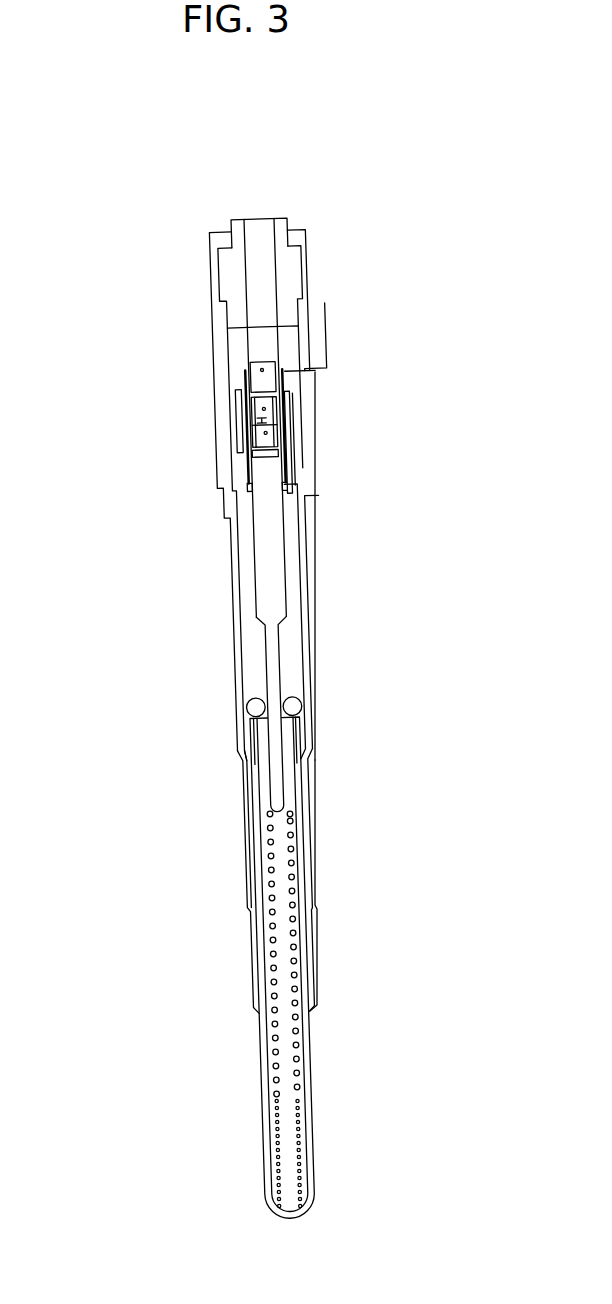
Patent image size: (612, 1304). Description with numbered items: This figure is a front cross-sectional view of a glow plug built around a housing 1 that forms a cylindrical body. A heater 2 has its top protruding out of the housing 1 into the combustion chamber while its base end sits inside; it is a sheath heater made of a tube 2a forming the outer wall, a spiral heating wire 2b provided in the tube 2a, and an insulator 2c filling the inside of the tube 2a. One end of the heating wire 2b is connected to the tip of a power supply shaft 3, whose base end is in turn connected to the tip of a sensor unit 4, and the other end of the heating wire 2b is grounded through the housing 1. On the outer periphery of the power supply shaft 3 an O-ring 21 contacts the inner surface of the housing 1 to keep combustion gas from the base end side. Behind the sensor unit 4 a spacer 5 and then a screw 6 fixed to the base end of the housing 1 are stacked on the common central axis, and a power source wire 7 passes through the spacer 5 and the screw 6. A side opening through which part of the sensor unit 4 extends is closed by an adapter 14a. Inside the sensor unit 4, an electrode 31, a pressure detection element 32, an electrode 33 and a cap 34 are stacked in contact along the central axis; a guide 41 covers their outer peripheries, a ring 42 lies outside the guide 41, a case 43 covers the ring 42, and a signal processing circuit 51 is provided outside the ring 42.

The housing 1 is at (312, 238).
The heater 2 is at (182, 971).
The tube 2a is at (260, 1037).
The spiral heating wire 2b is at (278, 1153).
The insulator 2c is at (217, 1009).
The power supply shaft 3 is at (263, 661).
The sensor unit 4 is at (162, 461).
The spacer 5 is at (228, 343).
The screw 6 is at (260, 219).
The power source wire 7 is at (279, 278).
The adapter 14a is at (315, 397).
The O-ring 21 is at (306, 707).
The electrode 31 is at (263, 432).
The pressure detection element 32 is at (260, 420).
The electrode 33 is at (255, 410).
The cap 34 is at (252, 368).
The guide 41 is at (248, 383).
The ring 42 is at (250, 489).
The case 43 is at (233, 488).
The signal processing circuit 51 is at (255, 447).